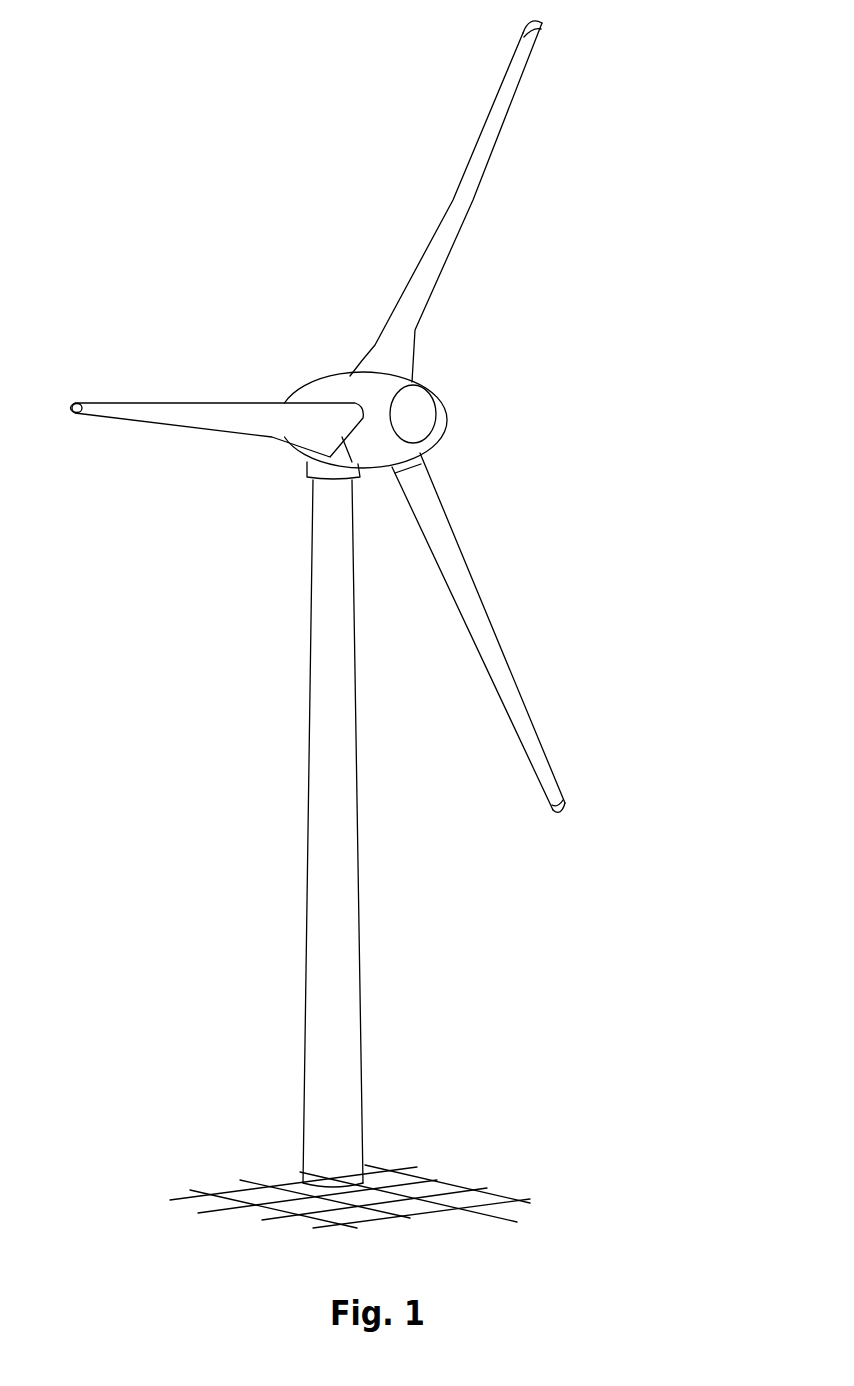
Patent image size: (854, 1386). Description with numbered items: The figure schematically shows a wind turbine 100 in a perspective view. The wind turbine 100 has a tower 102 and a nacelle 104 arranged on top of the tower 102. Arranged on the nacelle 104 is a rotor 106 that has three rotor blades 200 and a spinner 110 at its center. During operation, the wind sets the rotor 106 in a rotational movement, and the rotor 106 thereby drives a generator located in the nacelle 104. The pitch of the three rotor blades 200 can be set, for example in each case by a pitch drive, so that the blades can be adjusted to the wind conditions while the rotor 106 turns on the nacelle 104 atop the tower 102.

The wind turbine 100 is at (262, 556).
The tower 102 is at (340, 938).
The nacelle 104 is at (327, 390).
The rotor 106 is at (514, 330).
The spinner 110 is at (437, 417).
The rotor blades 200 is at (483, 155).